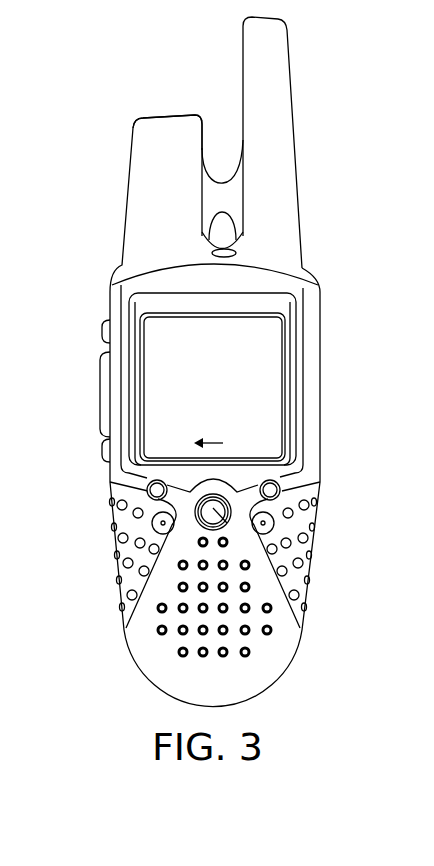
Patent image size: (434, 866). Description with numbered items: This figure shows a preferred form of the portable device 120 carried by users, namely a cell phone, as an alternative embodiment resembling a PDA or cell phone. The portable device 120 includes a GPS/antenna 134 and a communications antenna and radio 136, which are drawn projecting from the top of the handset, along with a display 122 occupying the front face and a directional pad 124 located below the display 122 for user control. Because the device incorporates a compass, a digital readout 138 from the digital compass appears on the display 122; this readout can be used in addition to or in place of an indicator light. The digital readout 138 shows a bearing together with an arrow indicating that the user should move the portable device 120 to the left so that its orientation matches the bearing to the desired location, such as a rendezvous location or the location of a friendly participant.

The portable device 120 is at (76, 56).
The display 122 is at (275, 361).
The directional pad 124 is at (228, 521).
The GPS/antenna 134 is at (135, 155).
The communications antenna and radio 136 is at (282, 100).
The digital readout 138 is at (278, 447).